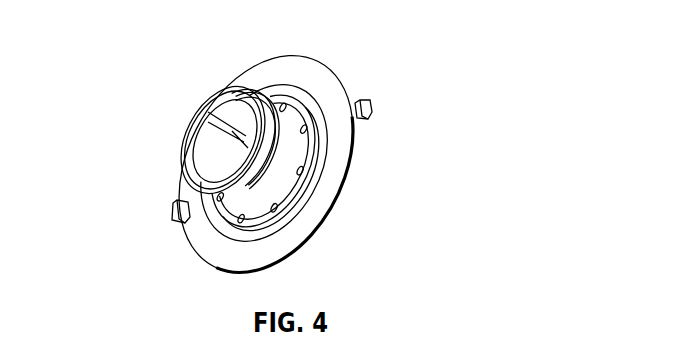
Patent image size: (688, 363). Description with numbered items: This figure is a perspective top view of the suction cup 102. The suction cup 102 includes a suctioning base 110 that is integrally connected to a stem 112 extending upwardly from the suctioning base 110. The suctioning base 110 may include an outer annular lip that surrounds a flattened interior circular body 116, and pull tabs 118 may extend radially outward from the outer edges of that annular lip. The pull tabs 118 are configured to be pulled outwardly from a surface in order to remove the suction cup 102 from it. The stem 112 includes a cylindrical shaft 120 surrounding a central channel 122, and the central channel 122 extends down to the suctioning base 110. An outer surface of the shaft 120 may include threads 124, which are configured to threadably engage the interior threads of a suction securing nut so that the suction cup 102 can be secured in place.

The suction cup 102 is at (164, 90).
The suctioning base 110 is at (345, 87).
The stem 112 is at (284, 105).
The flattened interior circular body 116 is at (322, 117).
The pull tabs 118 is at (372, 107).
The cylindrical shaft 120 is at (222, 198).
The central channel 122 is at (207, 147).
The threads 124 is at (277, 142).